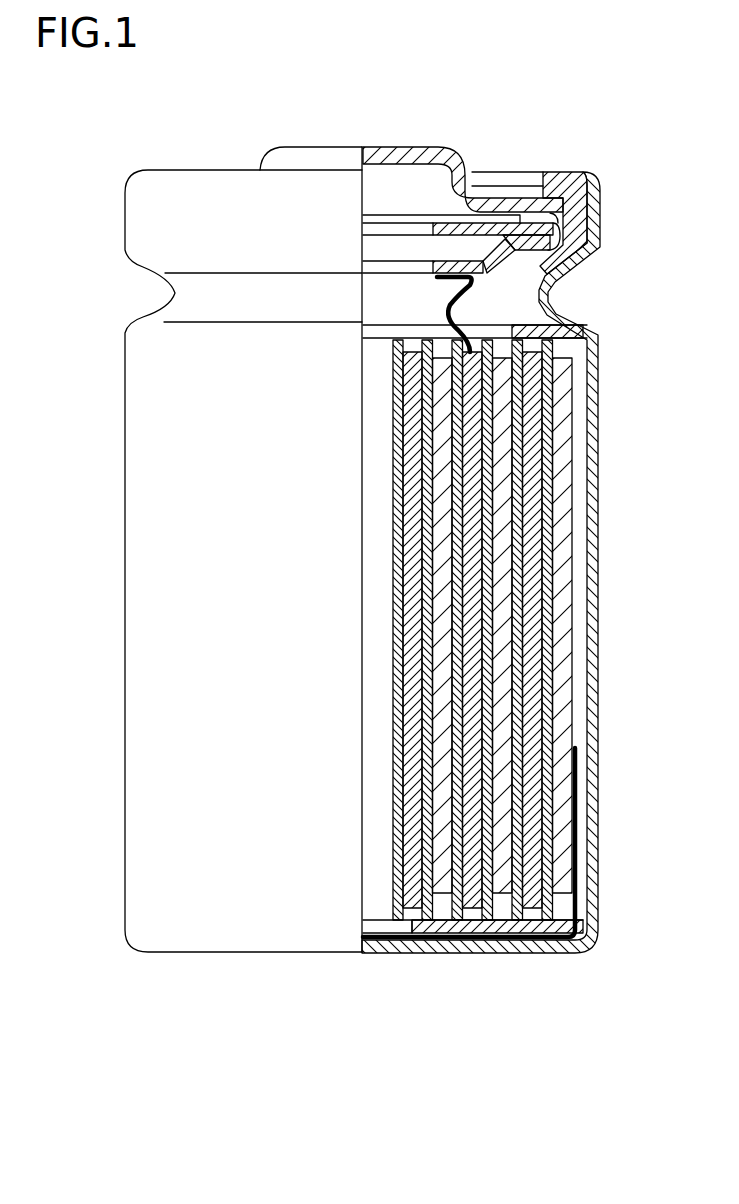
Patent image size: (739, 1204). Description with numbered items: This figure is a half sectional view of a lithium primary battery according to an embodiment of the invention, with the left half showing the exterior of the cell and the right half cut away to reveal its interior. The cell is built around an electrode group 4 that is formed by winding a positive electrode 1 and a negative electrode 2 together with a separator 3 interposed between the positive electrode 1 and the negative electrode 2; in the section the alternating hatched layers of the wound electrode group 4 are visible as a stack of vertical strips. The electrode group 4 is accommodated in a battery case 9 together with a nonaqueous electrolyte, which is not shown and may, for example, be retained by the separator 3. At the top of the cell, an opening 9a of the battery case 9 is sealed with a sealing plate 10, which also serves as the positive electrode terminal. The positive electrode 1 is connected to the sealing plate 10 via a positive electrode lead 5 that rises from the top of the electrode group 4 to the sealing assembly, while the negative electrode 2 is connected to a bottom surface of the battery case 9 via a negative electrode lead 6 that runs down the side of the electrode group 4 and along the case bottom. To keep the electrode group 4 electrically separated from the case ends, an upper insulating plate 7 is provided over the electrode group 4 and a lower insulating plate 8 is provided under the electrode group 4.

The positive electrode 1 is at (532, 508).
The negative electrode 2 is at (560, 412).
The separator 3 is at (518, 464).
The electrode group 4 is at (653, 400).
The positive electrode lead 5 is at (470, 284).
The negative electrode lead 6 is at (577, 840).
The upper insulating plate 7 is at (598, 333).
The lower insulating plate 8 is at (543, 945).
The battery case 9 is at (593, 695).
The opening 9a is at (543, 172).
The sealing plate 10 is at (494, 203).